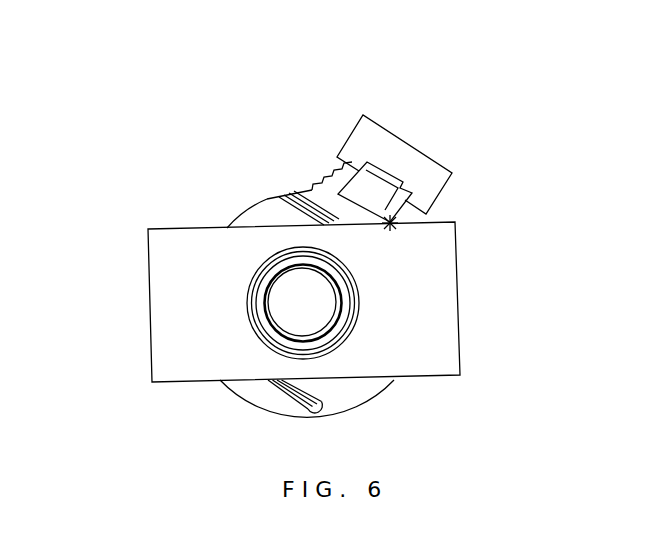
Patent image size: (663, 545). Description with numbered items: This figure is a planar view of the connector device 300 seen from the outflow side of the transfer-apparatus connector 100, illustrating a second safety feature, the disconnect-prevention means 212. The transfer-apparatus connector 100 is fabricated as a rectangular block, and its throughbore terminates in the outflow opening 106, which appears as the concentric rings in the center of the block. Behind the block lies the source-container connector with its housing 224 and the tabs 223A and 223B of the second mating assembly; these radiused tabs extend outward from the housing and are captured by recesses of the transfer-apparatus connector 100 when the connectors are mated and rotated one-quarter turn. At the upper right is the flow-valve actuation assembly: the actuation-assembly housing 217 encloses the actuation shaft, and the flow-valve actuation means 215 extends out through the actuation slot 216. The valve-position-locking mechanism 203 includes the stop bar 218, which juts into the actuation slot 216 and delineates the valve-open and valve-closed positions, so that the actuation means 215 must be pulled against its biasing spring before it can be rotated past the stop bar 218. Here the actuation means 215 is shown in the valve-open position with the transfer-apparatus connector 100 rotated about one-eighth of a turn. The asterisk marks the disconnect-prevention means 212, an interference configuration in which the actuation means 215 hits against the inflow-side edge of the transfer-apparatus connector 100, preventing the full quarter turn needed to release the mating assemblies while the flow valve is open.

The connector device 300 is at (498, 35).
The transfer-apparatus connector 100 is at (248, 302).
The outflow opening 106 is at (406, 303).
The tab 223B is at (277, 137).
The tab 223A is at (370, 418).
The housing 224 is at (242, 426).
The stop bar 218 is at (334, 135).
The actuation-assembly housing 217 is at (410, 155).
The actuation slot 216 is at (431, 174).
The flow-valve actuation means 215 is at (463, 185).
The valve-position-locking mechanism 203 is at (471, 214).
The disconnect-prevention means 212 is at (474, 248).